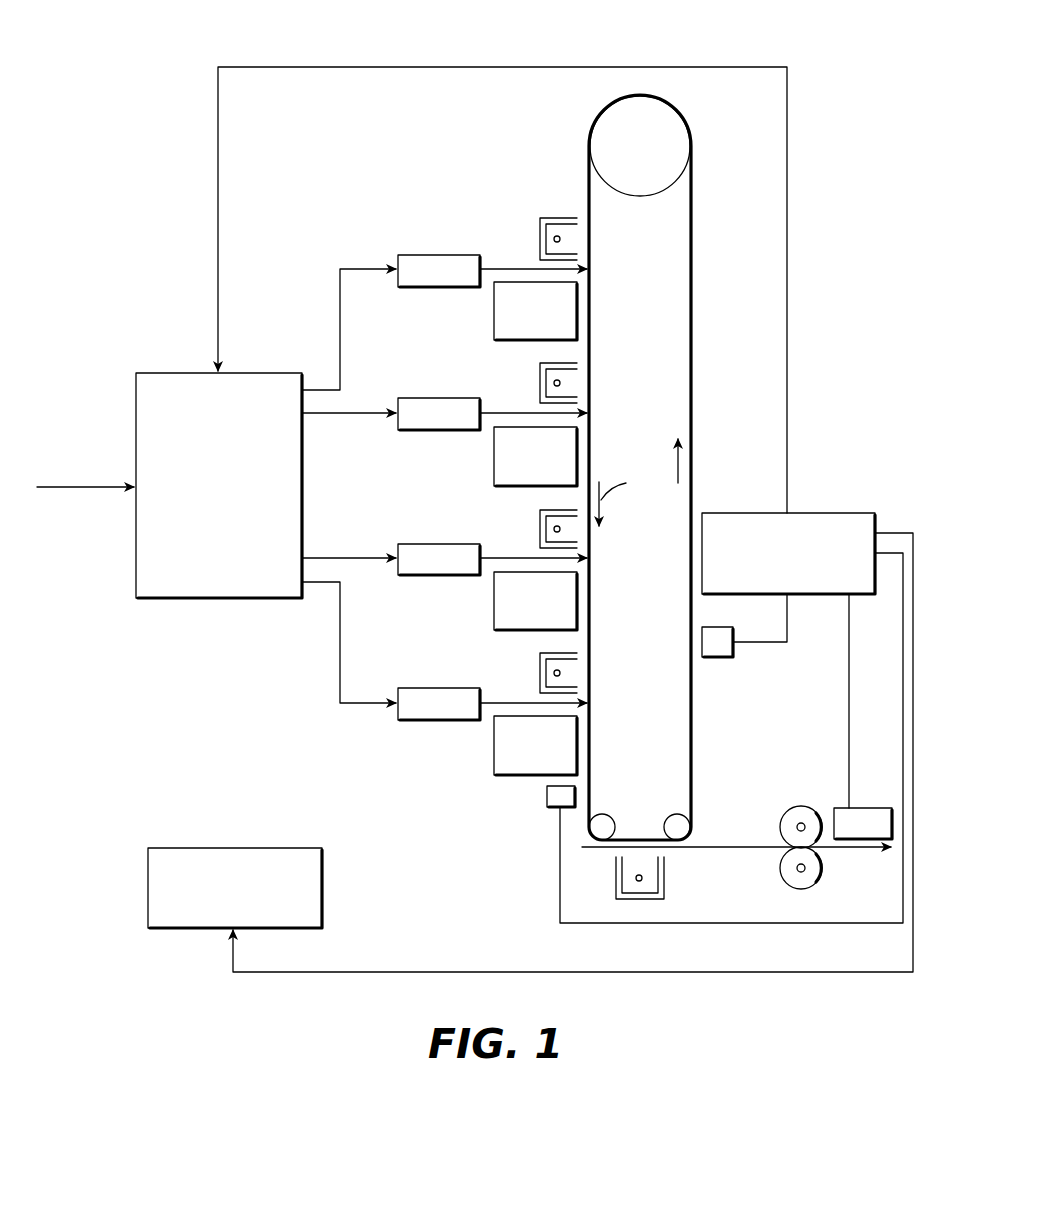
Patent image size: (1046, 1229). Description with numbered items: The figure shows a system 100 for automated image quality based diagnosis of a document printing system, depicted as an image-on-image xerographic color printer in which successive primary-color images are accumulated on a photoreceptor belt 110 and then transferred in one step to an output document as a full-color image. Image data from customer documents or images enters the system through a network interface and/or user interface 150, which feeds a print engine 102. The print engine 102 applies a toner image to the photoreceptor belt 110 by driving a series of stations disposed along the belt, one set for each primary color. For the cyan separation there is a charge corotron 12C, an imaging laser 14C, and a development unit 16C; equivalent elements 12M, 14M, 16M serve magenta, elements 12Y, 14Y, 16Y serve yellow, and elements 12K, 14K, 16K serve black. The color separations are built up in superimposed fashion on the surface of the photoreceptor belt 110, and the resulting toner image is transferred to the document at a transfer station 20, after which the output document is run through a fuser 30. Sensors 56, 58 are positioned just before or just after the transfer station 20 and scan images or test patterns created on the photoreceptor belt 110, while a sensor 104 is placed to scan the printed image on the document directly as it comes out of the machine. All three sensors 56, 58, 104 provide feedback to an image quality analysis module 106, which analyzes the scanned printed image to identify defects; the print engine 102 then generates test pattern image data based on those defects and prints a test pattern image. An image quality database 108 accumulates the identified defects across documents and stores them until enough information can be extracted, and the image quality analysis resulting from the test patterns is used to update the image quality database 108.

The system 100 is at (304, 42).
The print engine 102 is at (206, 372).
The sensor 104 is at (850, 808).
The image quality analysis module 106 is at (808, 513).
The image quality database 108 is at (238, 848).
The photoreceptor belt 110 is at (692, 378).
The network interface and/or user interface 150 is at (89, 502).
The charge corotron 12C is at (540, 241).
The charge corotron 12M is at (540, 386).
The charge corotron 12Y is at (540, 536).
The charge corotron 12K is at (540, 681).
The imaging laser 14C is at (410, 255).
The imaging laser 14M is at (410, 398).
The imaging laser 14Y is at (410, 544).
The imaging laser 14K is at (410, 688).
The development unit 16C is at (494, 325).
The development unit 16M is at (494, 471).
The development unit 16Y is at (494, 618).
The development unit 16K is at (494, 763).
The transfer station 20 is at (684, 860).
The fuser 30 is at (788, 796).
The sensor 56 is at (718, 658).
The sensor 58 is at (547, 798).